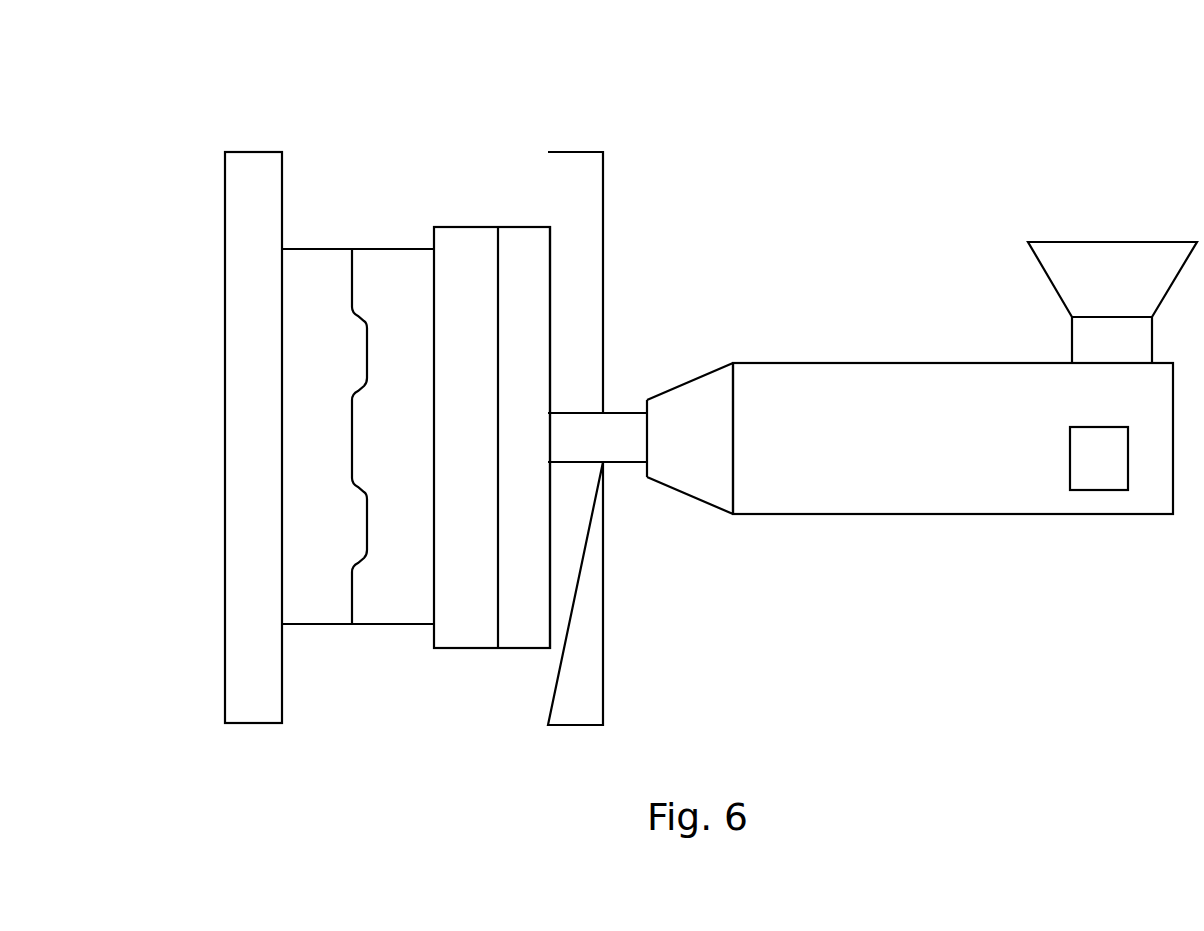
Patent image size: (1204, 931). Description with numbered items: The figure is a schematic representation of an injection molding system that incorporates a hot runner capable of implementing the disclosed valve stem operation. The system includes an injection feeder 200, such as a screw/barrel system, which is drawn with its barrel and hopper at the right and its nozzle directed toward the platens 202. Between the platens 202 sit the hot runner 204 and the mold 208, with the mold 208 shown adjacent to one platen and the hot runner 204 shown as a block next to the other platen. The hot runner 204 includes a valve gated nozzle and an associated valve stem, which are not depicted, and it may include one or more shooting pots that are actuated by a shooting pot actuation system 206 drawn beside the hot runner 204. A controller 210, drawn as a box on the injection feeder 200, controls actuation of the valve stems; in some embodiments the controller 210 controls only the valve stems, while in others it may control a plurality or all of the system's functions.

The injection feeder 200 is at (907, 420).
The platens 202 is at (258, 182).
The hot runner 204 is at (477, 227).
The shooting pot actuation system 206 is at (523, 650).
The mold 208 is at (437, 682).
The controller 210 is at (1098, 490).